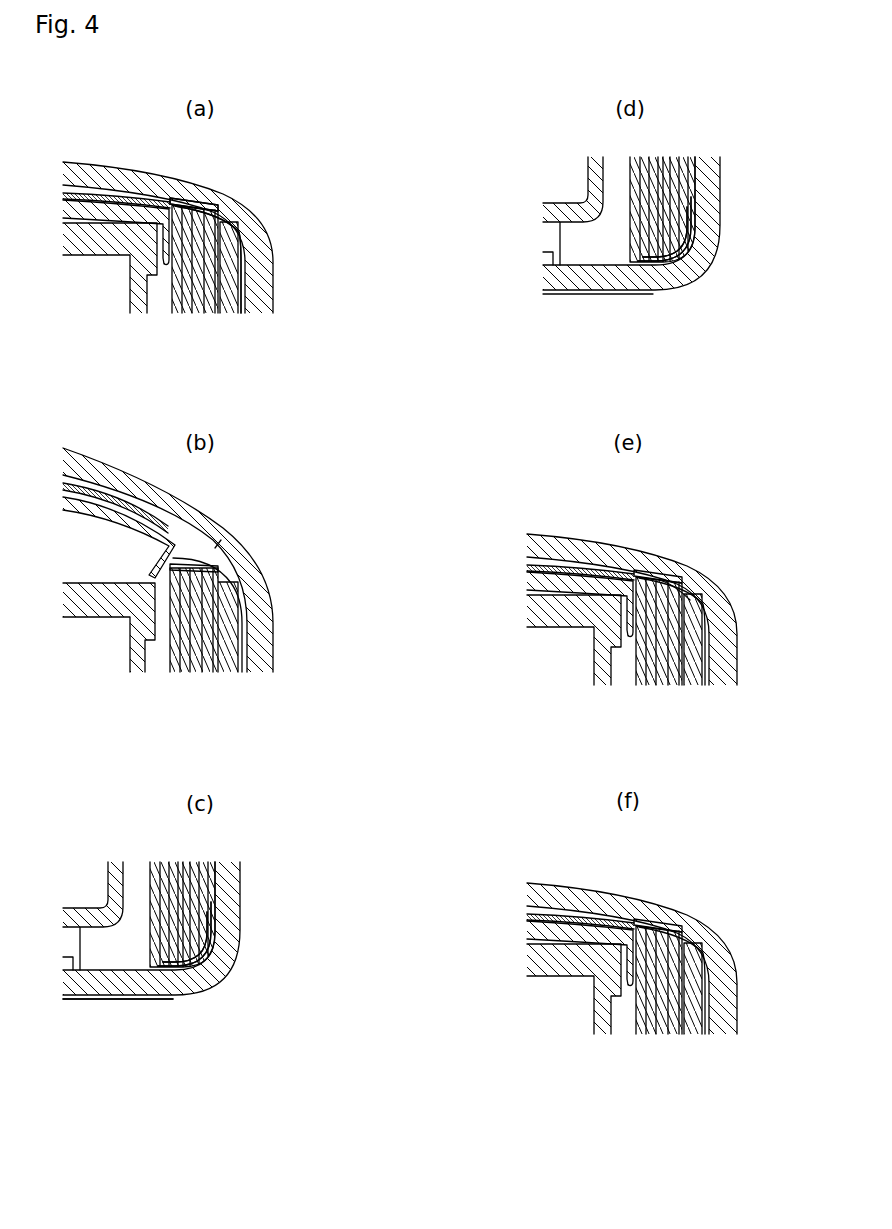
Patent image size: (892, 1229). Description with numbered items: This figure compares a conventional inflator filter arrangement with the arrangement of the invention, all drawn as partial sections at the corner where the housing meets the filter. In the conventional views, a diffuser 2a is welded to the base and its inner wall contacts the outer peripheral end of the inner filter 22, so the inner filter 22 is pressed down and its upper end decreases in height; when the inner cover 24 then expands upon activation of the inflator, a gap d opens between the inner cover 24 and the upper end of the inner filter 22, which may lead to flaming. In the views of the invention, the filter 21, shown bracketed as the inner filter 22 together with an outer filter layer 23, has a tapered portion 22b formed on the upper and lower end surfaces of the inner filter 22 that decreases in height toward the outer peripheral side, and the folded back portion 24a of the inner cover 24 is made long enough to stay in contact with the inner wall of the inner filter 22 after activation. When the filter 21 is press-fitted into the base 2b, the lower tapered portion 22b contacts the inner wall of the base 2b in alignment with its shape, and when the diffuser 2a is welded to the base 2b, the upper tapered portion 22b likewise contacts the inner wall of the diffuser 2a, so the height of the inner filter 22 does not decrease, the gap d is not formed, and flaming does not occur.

The diffuser 2a is at (268, 285).
The base 2b is at (238, 904).
The filter 21 is at (309, 168).
The inner filter 22 is at (213, 200).
The tapered portion 22b is at (185, 993).
The second layer of laminate sheet 23 is at (247, 228).
The inner cover 24 is at (97, 205).
The folded back portion 24a is at (107, 253).
The gap d is at (221, 540).